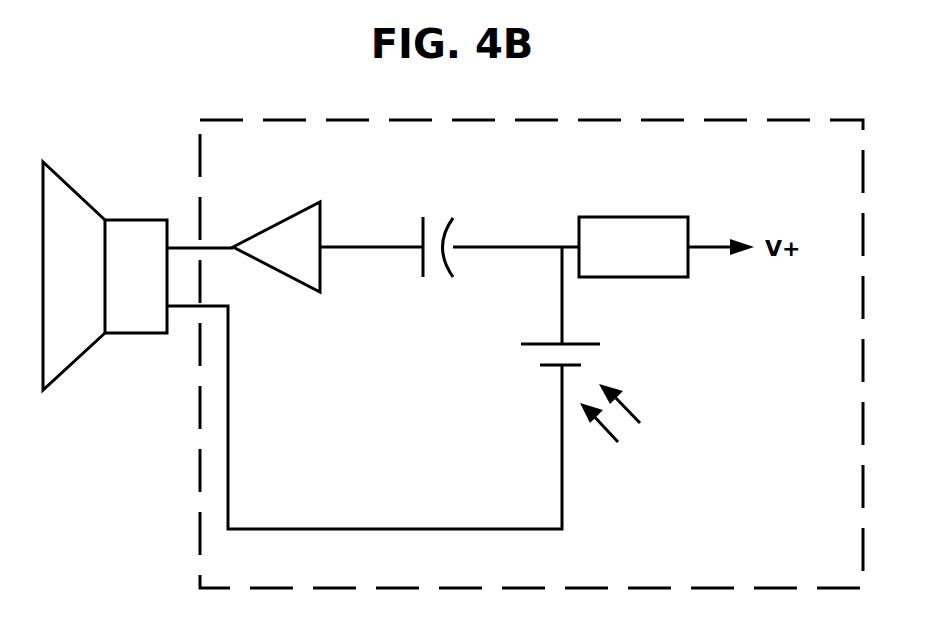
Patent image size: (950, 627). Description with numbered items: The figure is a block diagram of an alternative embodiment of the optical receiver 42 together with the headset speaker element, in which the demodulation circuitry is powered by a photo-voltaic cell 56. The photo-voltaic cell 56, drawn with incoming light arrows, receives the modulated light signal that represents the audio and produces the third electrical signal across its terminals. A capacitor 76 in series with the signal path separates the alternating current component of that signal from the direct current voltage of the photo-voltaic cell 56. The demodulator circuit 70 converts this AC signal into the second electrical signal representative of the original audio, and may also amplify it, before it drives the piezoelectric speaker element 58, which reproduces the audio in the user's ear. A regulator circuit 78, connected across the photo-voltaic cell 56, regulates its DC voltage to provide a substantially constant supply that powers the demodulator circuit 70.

The optical receiver 42 is at (745, 120).
The piezoelectric speaker element 58 is at (100, 212).
The demodulator circuit 70 is at (276, 247).
The capacitor 76 is at (420, 227).
The regulator circuit 78 is at (627, 216).
The photo-voltaic cell 56 is at (580, 343).